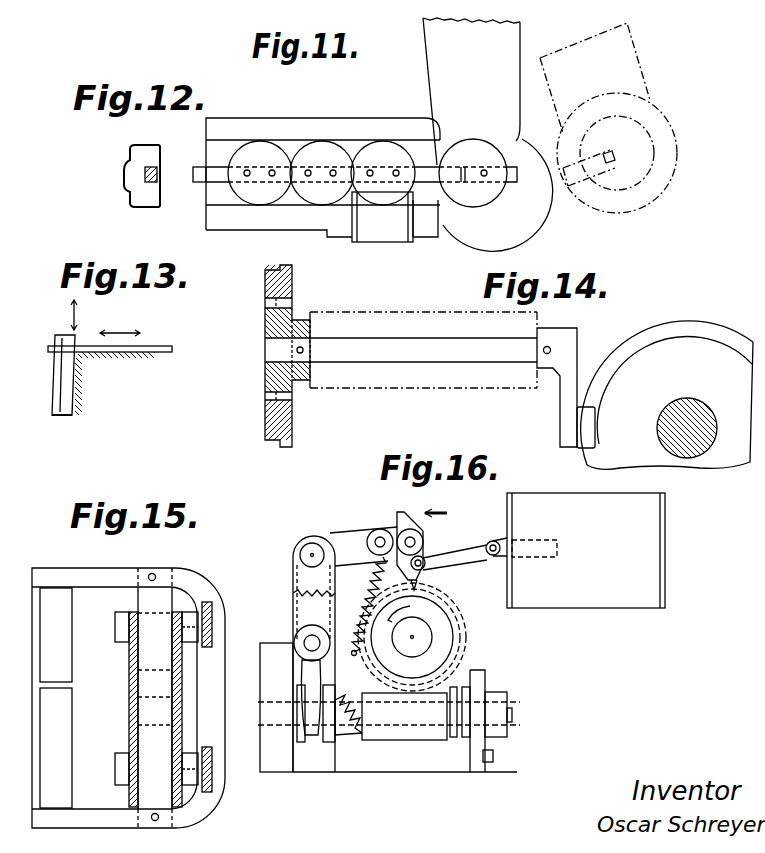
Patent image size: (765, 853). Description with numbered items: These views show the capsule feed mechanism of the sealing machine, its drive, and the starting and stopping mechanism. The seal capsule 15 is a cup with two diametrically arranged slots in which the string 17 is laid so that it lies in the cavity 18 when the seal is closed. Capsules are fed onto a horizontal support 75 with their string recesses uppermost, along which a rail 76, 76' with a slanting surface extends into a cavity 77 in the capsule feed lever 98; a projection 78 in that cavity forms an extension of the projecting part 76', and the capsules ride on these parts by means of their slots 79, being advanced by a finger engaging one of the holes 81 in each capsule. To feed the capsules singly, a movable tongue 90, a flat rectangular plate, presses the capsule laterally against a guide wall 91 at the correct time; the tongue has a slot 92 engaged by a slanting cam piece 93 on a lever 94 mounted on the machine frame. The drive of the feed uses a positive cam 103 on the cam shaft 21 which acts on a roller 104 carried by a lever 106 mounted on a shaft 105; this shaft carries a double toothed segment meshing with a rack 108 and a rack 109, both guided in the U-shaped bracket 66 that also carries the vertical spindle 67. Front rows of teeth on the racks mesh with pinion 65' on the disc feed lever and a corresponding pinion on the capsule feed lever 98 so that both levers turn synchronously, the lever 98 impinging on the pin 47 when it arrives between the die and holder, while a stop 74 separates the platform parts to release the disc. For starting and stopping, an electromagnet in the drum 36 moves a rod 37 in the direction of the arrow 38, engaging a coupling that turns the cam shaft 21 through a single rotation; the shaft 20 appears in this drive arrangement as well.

In FIG. 11, the capsule 15 is at (343, 162).
In FIG. 12, the capsule 15 is at (130, 196).
In FIG. 14, the string 17 is at (265, 322).
In FIG. 12, the cavity 18 is at (128, 166).
In FIG. 16, the shaft 20 is at (258, 706).
In FIG. 16, the cam shaft 21 is at (428, 626).
In FIG. 16, the drum 36 is at (586, 550).
In FIG. 16, the rod 37 is at (464, 556).
In FIG. 16, the arrow 38 is at (448, 517).
In FIG. 15, the pin 47 is at (43, 628).
In FIG. 15, the pinion 65' is at (144, 709).
In FIG. 15, the U-shaped bracket 66 is at (222, 692).
In FIG. 15, the vertical spindle 67 is at (147, 598).
In FIG. 15, the stop 74 is at (48, 754).
In FIG. 13, the horizontal support 75 is at (150, 356).
In FIG. 12, the rail 76 is at (184, 189).
In FIG. 11, the projecting part of the rail 76' is at (361, 153).
In FIG. 11, the cavity 77 is at (487, 196).
In FIG. 11, the projection 78 is at (515, 168).
In FIG. 12, the slots 79 is at (152, 168).
In FIG. 11, the holes 81 is at (333, 170).
In FIG. 11, the movable tongue 90 is at (372, 235).
In FIG. 13, the movable tongue 90 is at (160, 345).
In FIG. 11, the guide wall 91 is at (268, 130).
In FIG. 13, the slot 92 is at (62, 338).
In FIG. 13, the slanting cam piece 93 is at (56, 408).
In FIG. 13, the lever 94 is at (66, 418).
In FIG. 11, the capsule feed lever 98 is at (560, 50).
In FIG. 15, the capsule feed lever 98 is at (130, 652).
In FIG. 14, the positive cam 103 is at (685, 328).
In FIG. 14, the roller 104 is at (588, 425).
In FIG. 14, the shaft 105 is at (385, 345).
In FIG. 14, the lever 106 is at (560, 347).
In FIG. 14, the rack 108 is at (268, 270).
In FIG. 15, the rack 108 is at (212, 626).
In FIG. 14, the rack 109 is at (266, 412).
In FIG. 15, the rack 109 is at (212, 778).